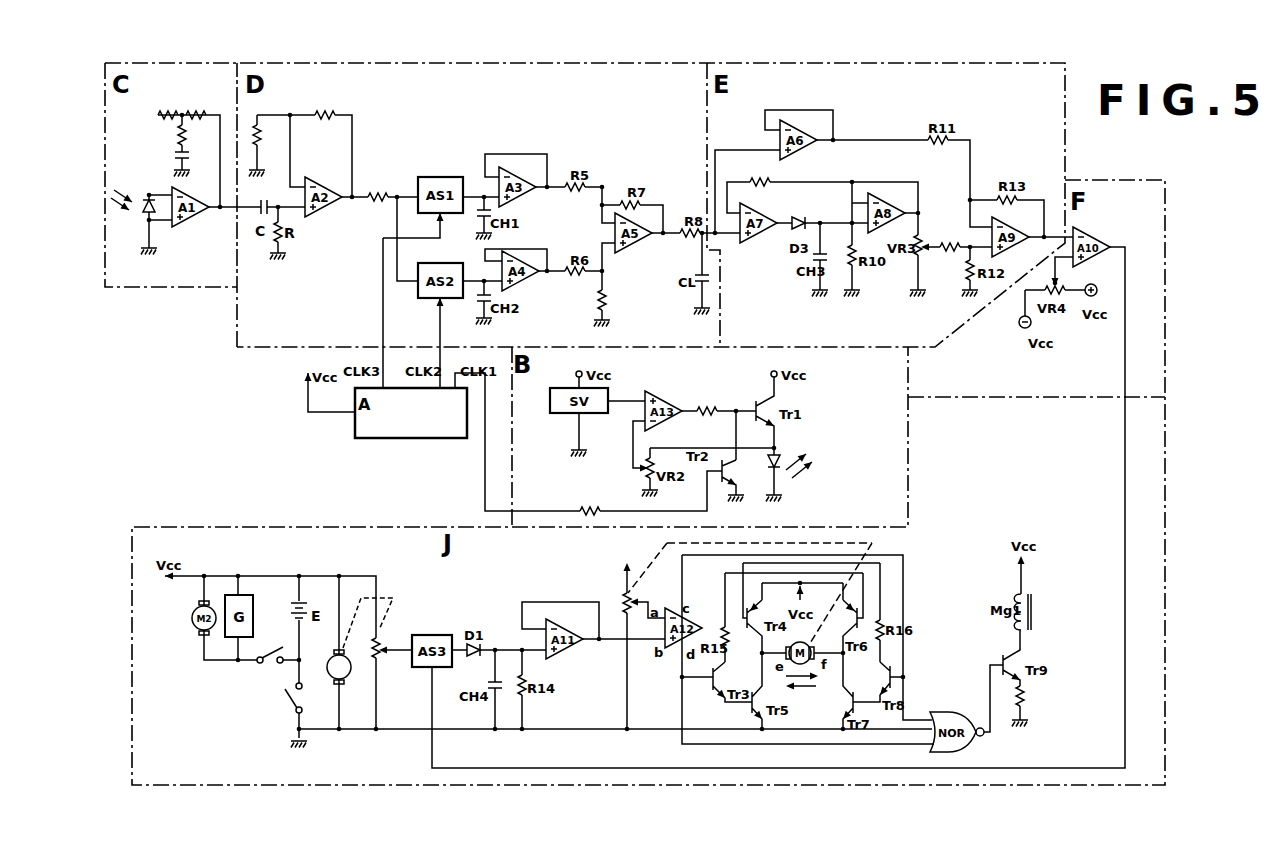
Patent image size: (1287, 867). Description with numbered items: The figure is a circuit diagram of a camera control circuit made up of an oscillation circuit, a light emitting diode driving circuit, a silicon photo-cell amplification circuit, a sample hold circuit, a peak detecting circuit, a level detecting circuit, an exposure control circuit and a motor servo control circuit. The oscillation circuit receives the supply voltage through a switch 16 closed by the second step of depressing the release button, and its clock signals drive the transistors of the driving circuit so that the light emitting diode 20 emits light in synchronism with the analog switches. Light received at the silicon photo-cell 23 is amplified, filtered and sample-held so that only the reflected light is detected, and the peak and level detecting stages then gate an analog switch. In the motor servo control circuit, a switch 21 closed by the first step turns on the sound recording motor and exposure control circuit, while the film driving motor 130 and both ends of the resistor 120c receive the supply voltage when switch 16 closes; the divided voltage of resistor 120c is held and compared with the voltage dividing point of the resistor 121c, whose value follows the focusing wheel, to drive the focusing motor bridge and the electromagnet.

The silicon photo-cell 23 is at (133, 212).
The light emitting diode 20 is at (790, 476).
The switch 21 is at (272, 649).
The switch 16 is at (285, 703).
The film driving motor 130 is at (360, 650).
The resistor 120c is at (394, 659).
The resistor 121c is at (614, 581).